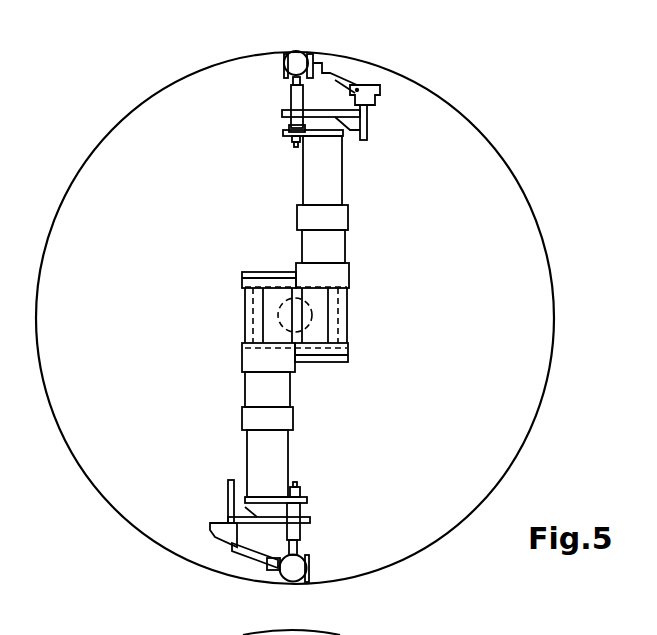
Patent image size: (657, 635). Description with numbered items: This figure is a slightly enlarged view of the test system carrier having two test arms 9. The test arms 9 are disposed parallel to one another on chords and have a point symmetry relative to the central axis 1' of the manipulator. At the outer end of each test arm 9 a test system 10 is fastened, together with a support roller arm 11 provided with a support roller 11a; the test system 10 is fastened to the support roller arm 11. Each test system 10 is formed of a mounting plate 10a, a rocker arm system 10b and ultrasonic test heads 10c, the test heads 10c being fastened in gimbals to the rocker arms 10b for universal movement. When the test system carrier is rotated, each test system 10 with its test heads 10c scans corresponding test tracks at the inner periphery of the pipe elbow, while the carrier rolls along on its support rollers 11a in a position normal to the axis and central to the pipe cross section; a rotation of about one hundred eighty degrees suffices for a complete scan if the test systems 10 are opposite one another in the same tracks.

The test system 10 is at (283, 54).
The mounting plate 10a is at (363, 120).
The rocker arm system 10b is at (342, 75).
The ultrasonic test heads 10c is at (310, 57).
The support roller arm 11 is at (310, 138).
The support roller 11a is at (287, 67).
The test arm 9 is at (333, 182).
The central axis 1' is at (314, 322).